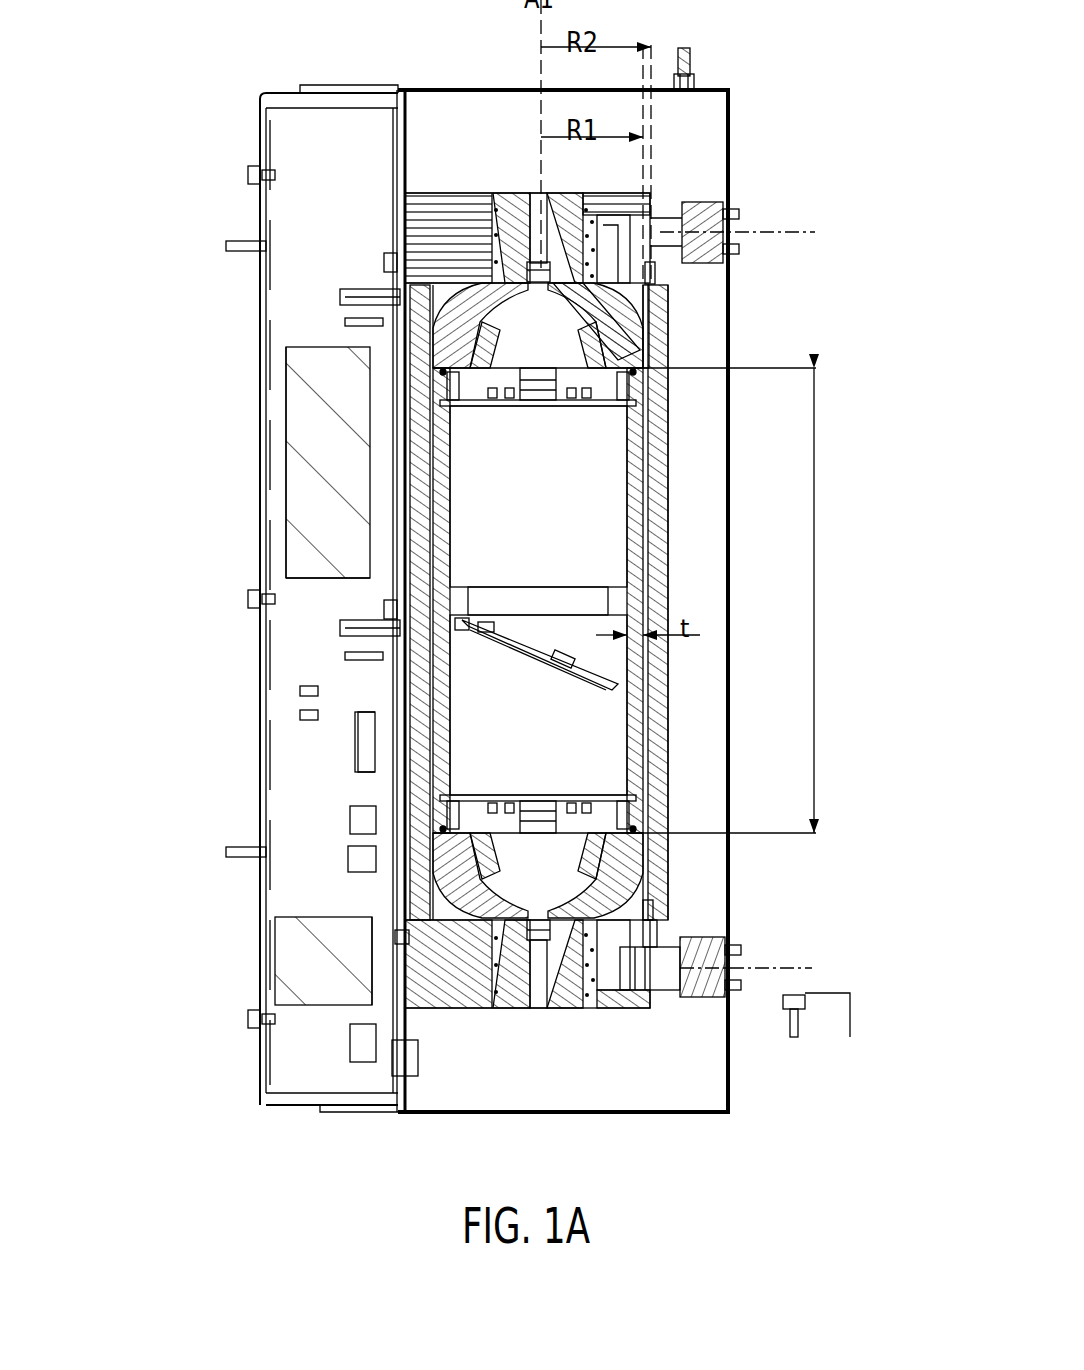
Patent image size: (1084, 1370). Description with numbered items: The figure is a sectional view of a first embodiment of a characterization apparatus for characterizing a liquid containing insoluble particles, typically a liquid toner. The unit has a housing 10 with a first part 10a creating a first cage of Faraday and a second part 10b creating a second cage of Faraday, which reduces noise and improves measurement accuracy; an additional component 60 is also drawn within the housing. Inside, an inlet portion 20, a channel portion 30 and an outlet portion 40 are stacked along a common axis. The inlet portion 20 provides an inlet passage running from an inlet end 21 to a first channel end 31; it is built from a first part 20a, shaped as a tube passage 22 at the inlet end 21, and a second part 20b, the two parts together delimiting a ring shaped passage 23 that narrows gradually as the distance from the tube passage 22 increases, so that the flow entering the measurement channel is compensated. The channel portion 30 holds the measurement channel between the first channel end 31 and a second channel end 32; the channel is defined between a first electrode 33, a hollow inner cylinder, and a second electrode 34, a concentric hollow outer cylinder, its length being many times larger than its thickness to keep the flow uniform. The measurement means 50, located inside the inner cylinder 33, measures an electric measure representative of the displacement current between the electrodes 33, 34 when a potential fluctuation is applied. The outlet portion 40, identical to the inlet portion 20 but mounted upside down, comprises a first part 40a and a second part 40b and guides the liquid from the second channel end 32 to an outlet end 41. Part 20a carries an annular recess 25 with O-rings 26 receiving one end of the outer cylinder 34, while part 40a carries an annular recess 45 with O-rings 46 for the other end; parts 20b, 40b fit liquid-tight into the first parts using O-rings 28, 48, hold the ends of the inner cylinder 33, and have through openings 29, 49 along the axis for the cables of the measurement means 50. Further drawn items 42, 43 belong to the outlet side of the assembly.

The housing 10 is at (214, 169).
The first part of the housing 10a is at (258, 735).
The second part of the housing 10b is at (728, 1052).
The inlet portion 20 is at (817, 840).
The first part of the inlet portion 20a is at (453, 1010).
The second part of the inlet portion 20b is at (458, 878).
The inlet end 21 is at (712, 987).
The tube passage 22 is at (648, 1000).
The ring shaped passage 23 is at (607, 990).
The annular recess 25 is at (665, 897).
The O-rings 26 is at (668, 927).
The O-rings 28 is at (495, 985).
The through opening 29 is at (532, 1005).
The channel portion 30 is at (826, 368).
The first channel end 31 is at (652, 830).
The second channel end 32 is at (640, 376).
The first electrode 33 is at (645, 512).
The second electrode 34 is at (658, 572).
The outlet portion 40 is at (826, 200).
The first part of the outlet portion 40a is at (432, 229).
The second part of the outlet portion 40b is at (448, 328).
The outlet end 41 is at (735, 224).
The upper bearing block 42 is at (664, 234).
The upper support 43 is at (612, 232).
The annular recess 45 is at (652, 308).
The O-rings 46 is at (658, 276).
The O-rings 48 is at (490, 200).
The through opening 49 is at (524, 214).
The measurement means 50 is at (598, 700).
The control unit 60 is at (290, 462).